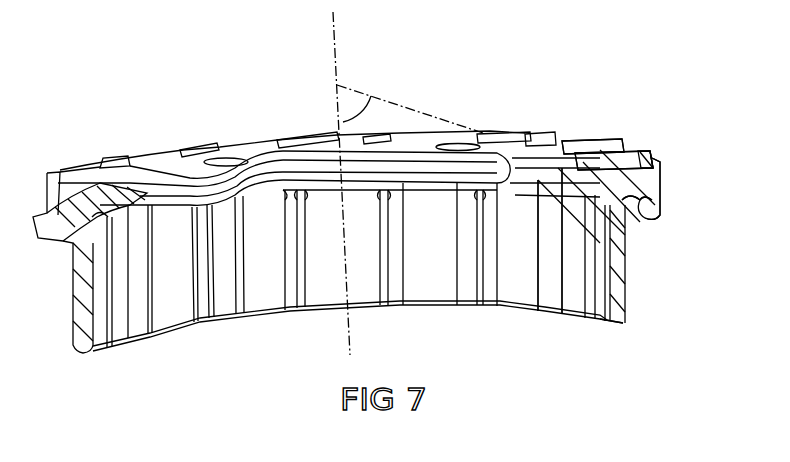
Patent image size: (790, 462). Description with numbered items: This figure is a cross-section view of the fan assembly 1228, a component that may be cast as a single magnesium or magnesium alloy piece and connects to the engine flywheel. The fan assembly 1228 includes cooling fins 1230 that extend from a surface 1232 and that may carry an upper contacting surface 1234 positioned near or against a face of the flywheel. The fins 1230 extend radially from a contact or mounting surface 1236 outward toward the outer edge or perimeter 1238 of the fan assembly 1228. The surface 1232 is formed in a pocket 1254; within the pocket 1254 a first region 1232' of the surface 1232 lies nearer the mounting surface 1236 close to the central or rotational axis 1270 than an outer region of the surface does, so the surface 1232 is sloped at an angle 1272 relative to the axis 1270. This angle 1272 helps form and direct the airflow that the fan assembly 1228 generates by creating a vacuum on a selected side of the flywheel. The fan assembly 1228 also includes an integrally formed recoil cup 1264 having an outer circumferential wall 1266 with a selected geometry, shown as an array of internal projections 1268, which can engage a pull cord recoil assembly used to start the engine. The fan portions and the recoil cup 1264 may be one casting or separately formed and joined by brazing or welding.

The fan assembly 1228 is at (222, 64).
The rotational axis 1270 is at (335, 38).
The angle 1272 is at (347, 122).
The mounting surface 1236 is at (256, 145).
The contacting surface 1234 is at (598, 155).
The surface 1232 is at (625, 128).
The first region of the surface 1232' is at (573, 131).
The cooling fins 1230 is at (653, 148).
The pocket 1254 is at (630, 161).
The outer perimeter 1238 is at (658, 198).
The outer circumferential wall 1266 is at (610, 264).
The internal projections 1268 is at (557, 290).
The recoil cup 1264 is at (620, 326).